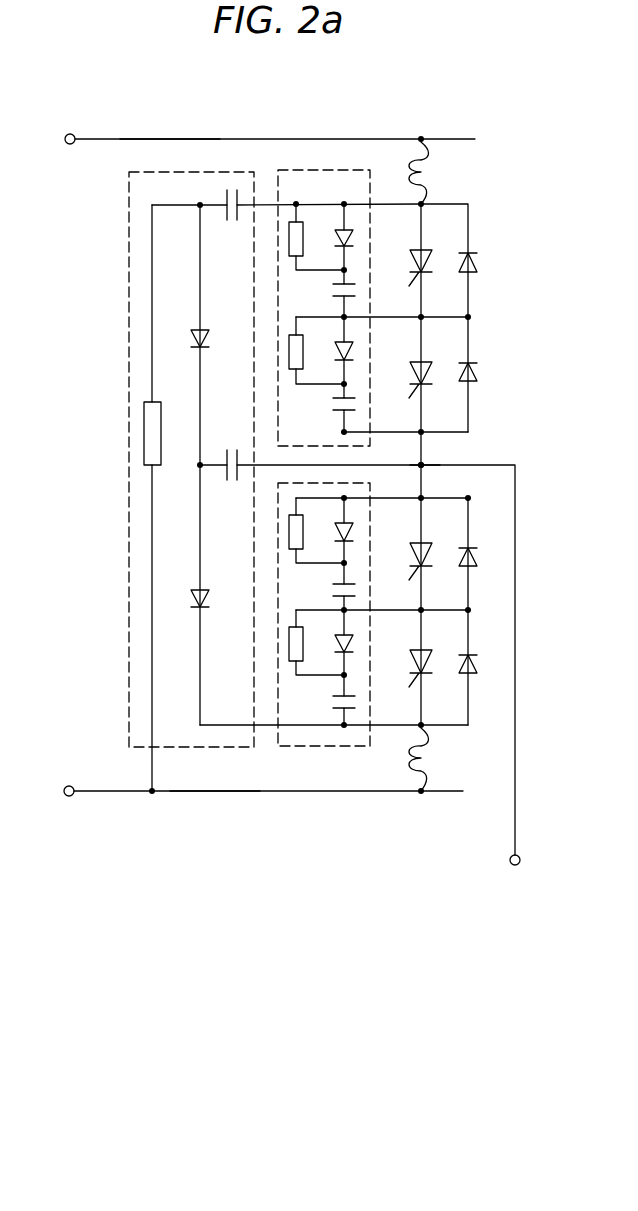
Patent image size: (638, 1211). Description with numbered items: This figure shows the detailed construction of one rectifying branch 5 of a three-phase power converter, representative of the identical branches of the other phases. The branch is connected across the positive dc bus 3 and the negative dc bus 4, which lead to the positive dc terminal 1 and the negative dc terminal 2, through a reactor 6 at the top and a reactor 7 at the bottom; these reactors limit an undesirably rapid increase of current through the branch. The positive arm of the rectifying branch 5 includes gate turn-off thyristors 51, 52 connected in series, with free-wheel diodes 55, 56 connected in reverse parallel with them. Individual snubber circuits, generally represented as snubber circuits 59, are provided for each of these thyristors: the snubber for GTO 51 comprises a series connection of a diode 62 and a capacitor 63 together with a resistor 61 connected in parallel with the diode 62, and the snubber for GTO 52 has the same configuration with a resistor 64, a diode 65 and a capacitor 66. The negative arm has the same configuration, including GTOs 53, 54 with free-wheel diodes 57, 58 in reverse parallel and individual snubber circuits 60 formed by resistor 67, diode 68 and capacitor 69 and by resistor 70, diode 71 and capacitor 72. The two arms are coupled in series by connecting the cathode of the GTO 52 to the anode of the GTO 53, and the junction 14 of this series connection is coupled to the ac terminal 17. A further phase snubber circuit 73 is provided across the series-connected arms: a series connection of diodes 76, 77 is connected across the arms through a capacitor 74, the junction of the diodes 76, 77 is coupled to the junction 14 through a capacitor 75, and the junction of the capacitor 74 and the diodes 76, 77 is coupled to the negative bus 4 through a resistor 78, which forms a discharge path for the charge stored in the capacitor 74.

The dc terminal 1 is at (70, 134).
The dc terminal 2 is at (69, 786).
The dc bus 3 is at (165, 138).
The dc bus 4 is at (213, 793).
The rectifying branch 5 is at (306, 88).
The reactor 6 is at (428, 163).
The reactor 7 is at (425, 770).
The junction 14 is at (425, 462).
The ac terminal 17 is at (520, 858).
The gate turn-off thyristor 51 is at (426, 256).
The gate turn-off thyristor 52 is at (426, 368).
The gate turn-off thyristor 53 is at (426, 550).
The gate turn-off thyristor 54 is at (426, 658).
The free-wheel diode 55 is at (474, 265).
The free-wheel diode 56 is at (474, 372).
The free-wheel diode 57 is at (474, 568).
The free-wheel diode 58 is at (474, 675).
The individual snubber circuit 59 is at (302, 170).
The individual snubber circuit 60 is at (300, 748).
The resistor 61 is at (300, 248).
The diode 62 is at (349, 242).
The capacitor 63 is at (357, 291).
The resistor 64 is at (300, 360).
The diode 65 is at (349, 352).
The capacitor 66 is at (357, 409).
The resistor 67 is at (300, 540).
The diode 68 is at (349, 535).
The capacitor 69 is at (357, 590).
The resistor 70 is at (300, 652).
The diode 71 is at (349, 645).
The capacitor 72 is at (357, 702).
The phase snubber circuit 73 is at (128, 250).
The capacitor 74 is at (234, 222).
The capacitor 75 is at (234, 482).
The diode 76 is at (207, 340).
The diode 77 is at (207, 602).
The resistor 78 is at (162, 450).